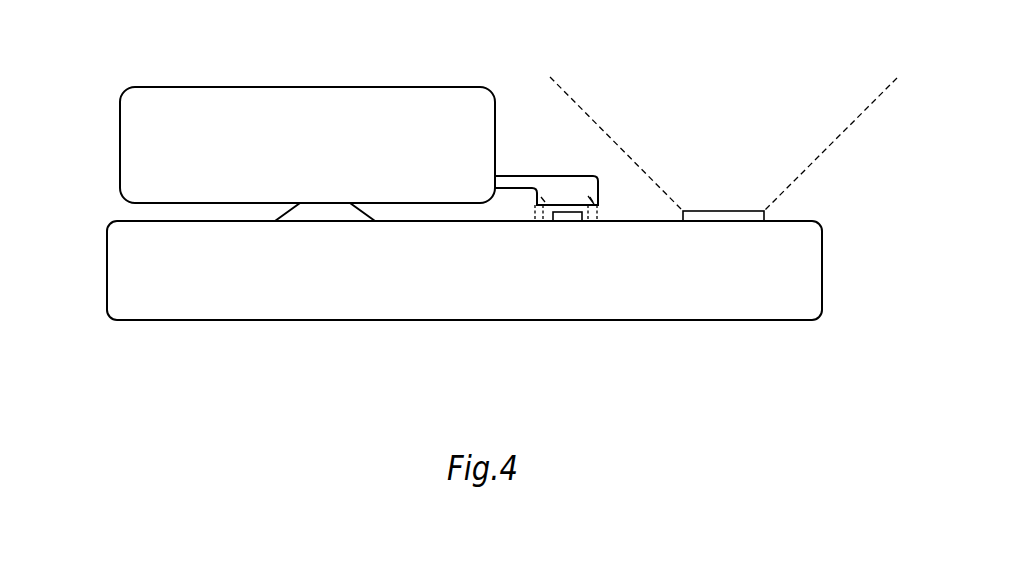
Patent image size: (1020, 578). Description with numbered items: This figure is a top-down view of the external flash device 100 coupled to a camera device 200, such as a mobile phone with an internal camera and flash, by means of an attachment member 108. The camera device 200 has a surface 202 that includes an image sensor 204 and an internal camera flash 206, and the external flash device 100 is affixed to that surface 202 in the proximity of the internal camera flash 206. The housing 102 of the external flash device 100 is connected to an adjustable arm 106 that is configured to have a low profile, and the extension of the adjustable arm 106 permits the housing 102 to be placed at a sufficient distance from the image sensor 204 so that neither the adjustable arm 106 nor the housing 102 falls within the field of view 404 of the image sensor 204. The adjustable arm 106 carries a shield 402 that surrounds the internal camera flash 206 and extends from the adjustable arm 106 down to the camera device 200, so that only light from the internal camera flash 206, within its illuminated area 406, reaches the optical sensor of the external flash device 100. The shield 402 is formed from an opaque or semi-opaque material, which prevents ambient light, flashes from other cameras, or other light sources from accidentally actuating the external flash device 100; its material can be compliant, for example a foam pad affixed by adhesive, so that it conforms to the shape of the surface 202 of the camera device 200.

The external flash device 100 is at (248, 97).
The housing 102 is at (120, 110).
The adjustable arm 106 is at (548, 175).
The attachment member 108 is at (297, 215).
The camera device 200 is at (248, 312).
The surface 202 is at (126, 221).
The image sensor 204 is at (718, 221).
The internal camera flash 206 is at (565, 222).
The shield 402 is at (542, 222).
The field of view 404 is at (830, 143).
The illuminated area 406 is at (590, 197).